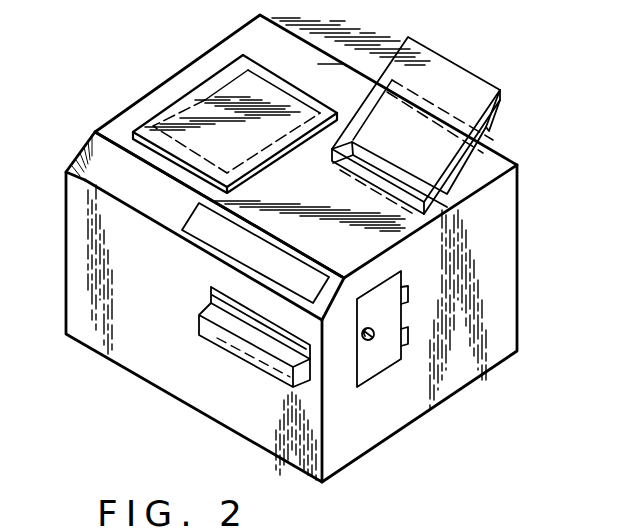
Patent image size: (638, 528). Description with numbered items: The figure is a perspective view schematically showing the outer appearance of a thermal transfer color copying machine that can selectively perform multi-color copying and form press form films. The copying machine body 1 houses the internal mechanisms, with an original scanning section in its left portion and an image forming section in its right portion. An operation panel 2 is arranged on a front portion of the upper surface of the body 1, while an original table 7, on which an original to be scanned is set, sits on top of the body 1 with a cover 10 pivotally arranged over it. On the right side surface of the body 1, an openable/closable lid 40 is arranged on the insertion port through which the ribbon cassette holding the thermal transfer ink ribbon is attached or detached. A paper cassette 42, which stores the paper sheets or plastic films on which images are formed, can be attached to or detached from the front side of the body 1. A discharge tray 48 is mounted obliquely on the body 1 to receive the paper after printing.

The copying machine body 1 is at (472, 377).
The operation panel 2 is at (200, 203).
The original table 7 is at (165, 122).
The cover 10 is at (200, 92).
The openable/closable lid 40 is at (377, 367).
The paper cassette 42 is at (244, 355).
The discharge tray 48 is at (473, 78).